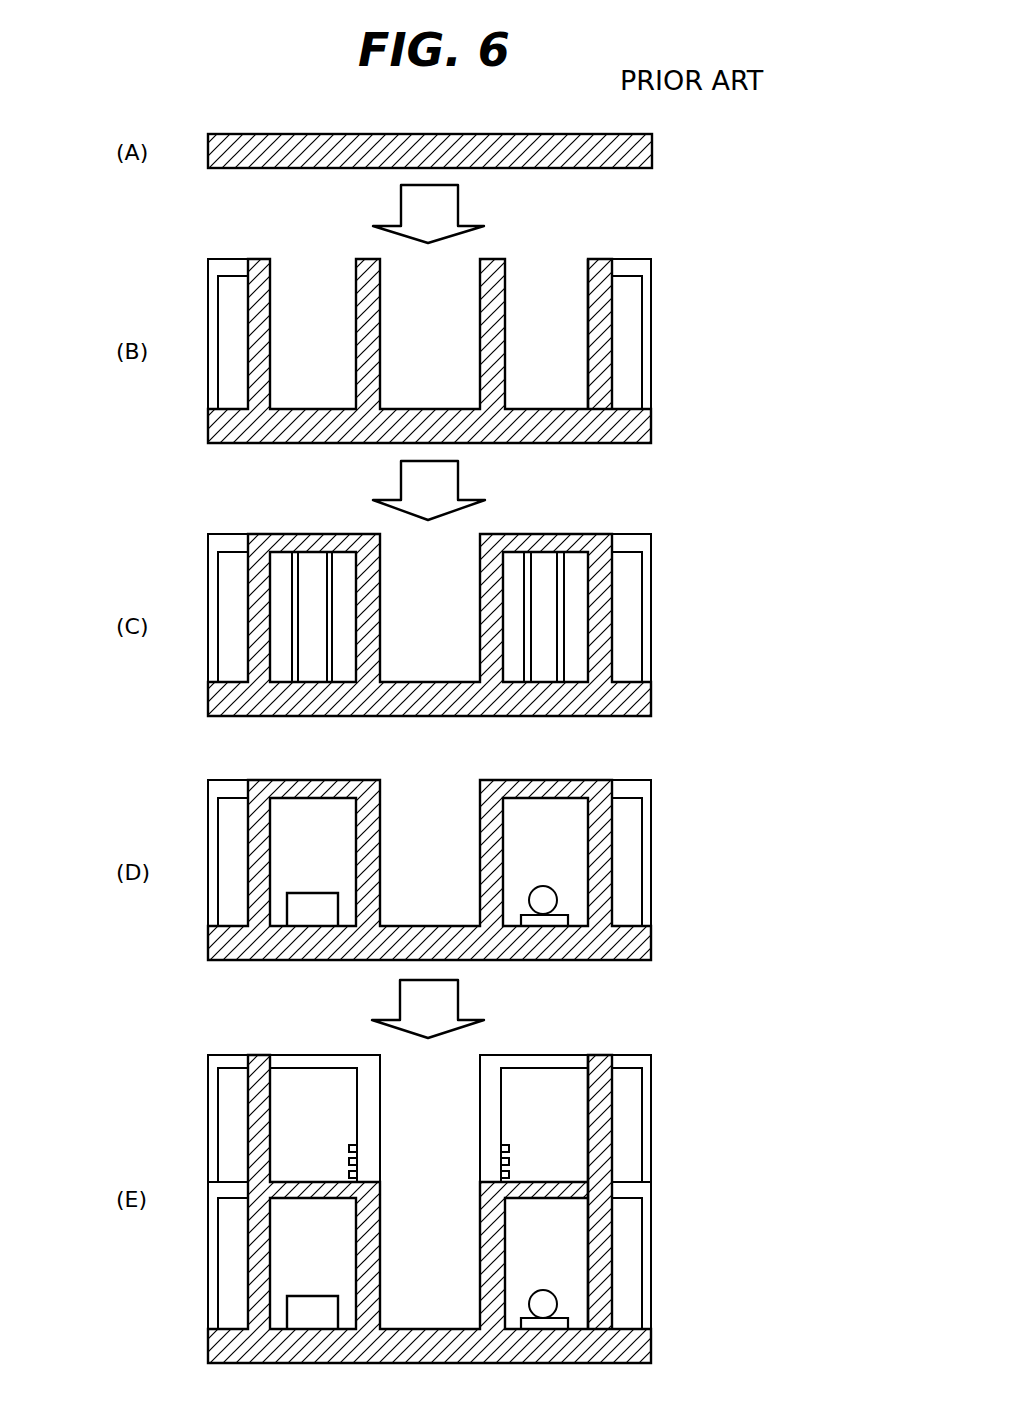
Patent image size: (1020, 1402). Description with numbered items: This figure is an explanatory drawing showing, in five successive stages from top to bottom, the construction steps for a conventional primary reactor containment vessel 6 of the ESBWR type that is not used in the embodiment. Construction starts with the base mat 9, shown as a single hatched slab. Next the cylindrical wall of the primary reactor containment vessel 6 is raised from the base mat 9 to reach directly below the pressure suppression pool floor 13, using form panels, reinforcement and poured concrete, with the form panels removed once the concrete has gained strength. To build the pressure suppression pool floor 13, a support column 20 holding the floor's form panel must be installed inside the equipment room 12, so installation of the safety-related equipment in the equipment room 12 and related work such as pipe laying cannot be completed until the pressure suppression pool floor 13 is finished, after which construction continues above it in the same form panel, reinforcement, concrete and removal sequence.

The base mat 9 is at (652, 150).
The primary reactor containment vessel 6 is at (598, 265).
The pressure suppression pool floor 13 is at (590, 546).
The support column 20 is at (550, 617).
The equipment room 12 is at (577, 653).